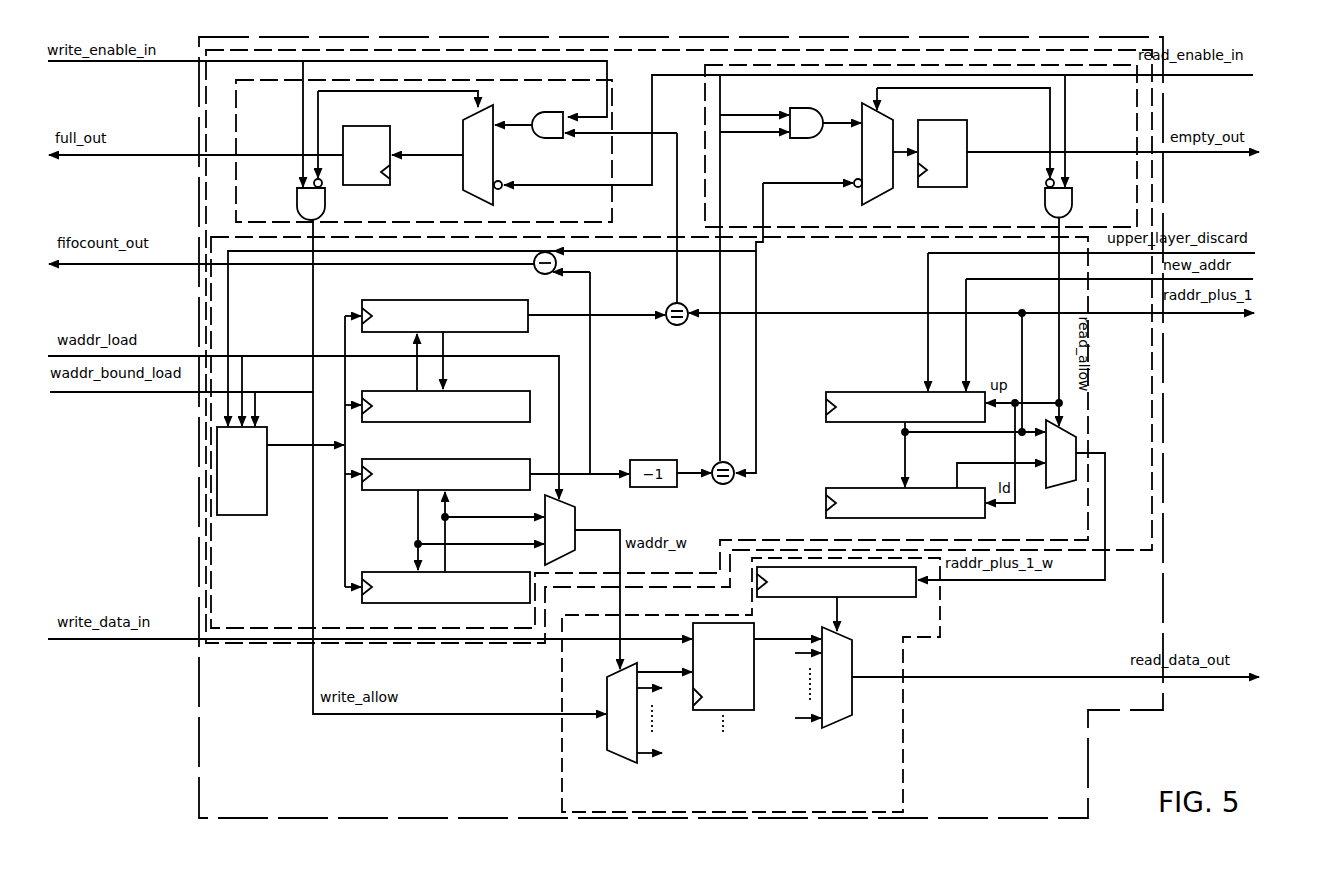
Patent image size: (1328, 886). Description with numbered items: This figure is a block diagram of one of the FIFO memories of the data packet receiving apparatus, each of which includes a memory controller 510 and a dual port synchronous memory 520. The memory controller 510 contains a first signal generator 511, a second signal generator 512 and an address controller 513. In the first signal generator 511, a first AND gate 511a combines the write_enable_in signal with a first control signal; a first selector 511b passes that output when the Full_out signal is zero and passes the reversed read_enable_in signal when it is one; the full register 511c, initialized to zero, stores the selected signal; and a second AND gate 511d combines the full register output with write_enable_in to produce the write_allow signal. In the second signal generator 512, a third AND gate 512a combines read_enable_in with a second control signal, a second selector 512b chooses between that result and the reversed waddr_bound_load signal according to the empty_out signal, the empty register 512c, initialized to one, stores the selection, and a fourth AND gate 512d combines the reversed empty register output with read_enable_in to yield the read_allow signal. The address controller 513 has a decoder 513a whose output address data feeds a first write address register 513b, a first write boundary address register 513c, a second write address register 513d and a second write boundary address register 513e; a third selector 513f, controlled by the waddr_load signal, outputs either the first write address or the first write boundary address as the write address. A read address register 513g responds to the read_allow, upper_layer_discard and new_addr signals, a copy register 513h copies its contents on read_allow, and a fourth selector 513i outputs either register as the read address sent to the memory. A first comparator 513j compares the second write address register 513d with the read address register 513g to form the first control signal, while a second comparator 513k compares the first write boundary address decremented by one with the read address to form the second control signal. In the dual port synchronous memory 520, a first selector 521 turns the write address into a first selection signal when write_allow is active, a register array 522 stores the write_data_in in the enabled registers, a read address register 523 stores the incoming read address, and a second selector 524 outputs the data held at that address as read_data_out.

The memory controller 510 is at (1152, 383).
The first signal generator 511 is at (612, 212).
The first AND gate 511a is at (558, 112).
The first selector 511b is at (493, 150).
The full register 511c is at (370, 126).
The second AND gate 511d is at (297, 192).
The second signal generator 512 is at (1137, 118).
The third AND gate 512a is at (810, 108).
The second selector 512b is at (893, 122).
The empty register 512c is at (967, 128).
The fourth AND gate 512d is at (1072, 192).
The address controller 513 is at (1090, 344).
The decoder 513a is at (248, 515).
The first write address register 513b is at (465, 572).
The first write boundary address register 513c is at (465, 459).
The second write address register 513d is at (465, 300).
The second write boundary address register 513e is at (465, 391).
The third selector 513f is at (575, 517).
The read address register 513g is at (870, 392).
The copy register 513h is at (870, 488).
The fourth selector 513i is at (1061, 488).
The first comparator 513j is at (677, 325).
The second comparator 513k is at (723, 484).
The dual port synchronous memory 520 is at (903, 727).
The first selector 521 is at (605, 698).
The register array 522 is at (770, 762).
The read address register 523 is at (863, 567).
The second selector 524 is at (852, 660).